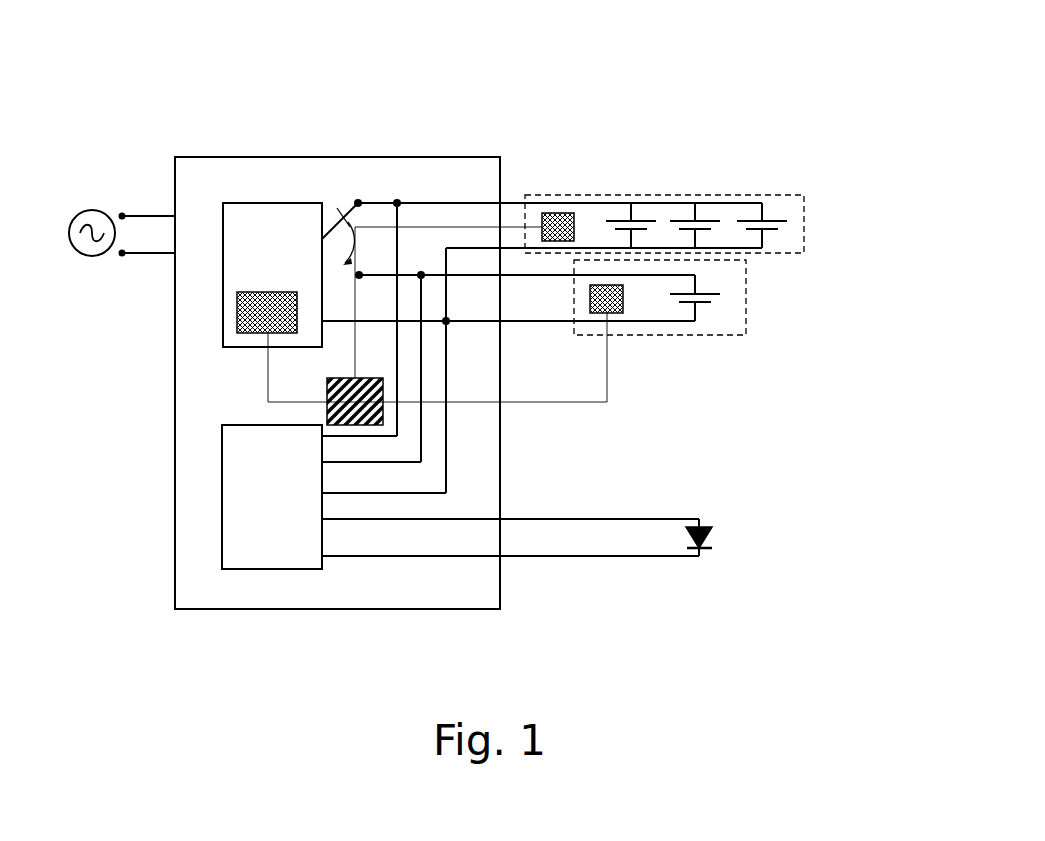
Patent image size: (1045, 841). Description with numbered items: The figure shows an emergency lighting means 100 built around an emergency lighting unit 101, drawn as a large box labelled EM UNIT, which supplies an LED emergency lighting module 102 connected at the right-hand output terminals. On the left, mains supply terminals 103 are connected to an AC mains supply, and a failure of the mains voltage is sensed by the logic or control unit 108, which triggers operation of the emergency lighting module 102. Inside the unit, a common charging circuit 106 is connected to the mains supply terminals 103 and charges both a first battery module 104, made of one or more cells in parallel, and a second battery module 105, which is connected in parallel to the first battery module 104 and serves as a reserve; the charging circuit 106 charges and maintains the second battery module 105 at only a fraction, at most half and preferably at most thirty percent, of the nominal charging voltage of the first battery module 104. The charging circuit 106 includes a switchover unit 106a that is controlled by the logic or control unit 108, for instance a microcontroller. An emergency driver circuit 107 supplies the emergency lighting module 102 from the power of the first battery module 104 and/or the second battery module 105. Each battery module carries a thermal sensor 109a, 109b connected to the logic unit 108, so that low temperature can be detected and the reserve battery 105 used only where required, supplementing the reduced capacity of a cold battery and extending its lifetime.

The emergency lighting means 100 is at (772, 107).
The emergency lighting unit 101 is at (313, 157).
The LED emergency lighting module 102 is at (710, 527).
The mains supply terminals 103 is at (155, 255).
The first battery module 104 is at (804, 225).
The second battery module 105 is at (746, 295).
The charging circuit 106 is at (262, 203).
The switchover unit 106a is at (240, 333).
The emergency driver circuit 107 is at (222, 495).
The logic or control unit 108 is at (383, 405).
The thermal sensor 109a is at (558, 213).
The thermal sensor 109b is at (607, 320).